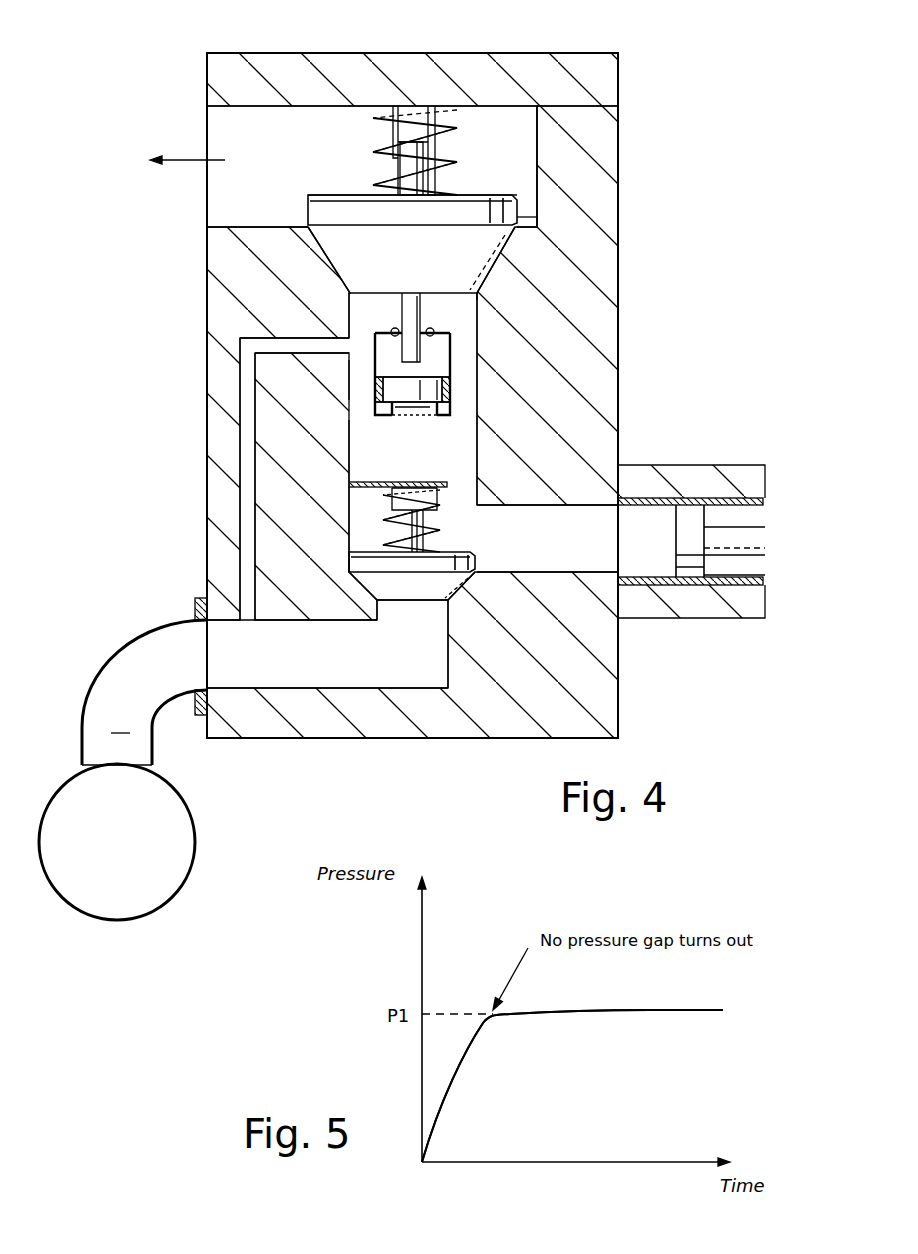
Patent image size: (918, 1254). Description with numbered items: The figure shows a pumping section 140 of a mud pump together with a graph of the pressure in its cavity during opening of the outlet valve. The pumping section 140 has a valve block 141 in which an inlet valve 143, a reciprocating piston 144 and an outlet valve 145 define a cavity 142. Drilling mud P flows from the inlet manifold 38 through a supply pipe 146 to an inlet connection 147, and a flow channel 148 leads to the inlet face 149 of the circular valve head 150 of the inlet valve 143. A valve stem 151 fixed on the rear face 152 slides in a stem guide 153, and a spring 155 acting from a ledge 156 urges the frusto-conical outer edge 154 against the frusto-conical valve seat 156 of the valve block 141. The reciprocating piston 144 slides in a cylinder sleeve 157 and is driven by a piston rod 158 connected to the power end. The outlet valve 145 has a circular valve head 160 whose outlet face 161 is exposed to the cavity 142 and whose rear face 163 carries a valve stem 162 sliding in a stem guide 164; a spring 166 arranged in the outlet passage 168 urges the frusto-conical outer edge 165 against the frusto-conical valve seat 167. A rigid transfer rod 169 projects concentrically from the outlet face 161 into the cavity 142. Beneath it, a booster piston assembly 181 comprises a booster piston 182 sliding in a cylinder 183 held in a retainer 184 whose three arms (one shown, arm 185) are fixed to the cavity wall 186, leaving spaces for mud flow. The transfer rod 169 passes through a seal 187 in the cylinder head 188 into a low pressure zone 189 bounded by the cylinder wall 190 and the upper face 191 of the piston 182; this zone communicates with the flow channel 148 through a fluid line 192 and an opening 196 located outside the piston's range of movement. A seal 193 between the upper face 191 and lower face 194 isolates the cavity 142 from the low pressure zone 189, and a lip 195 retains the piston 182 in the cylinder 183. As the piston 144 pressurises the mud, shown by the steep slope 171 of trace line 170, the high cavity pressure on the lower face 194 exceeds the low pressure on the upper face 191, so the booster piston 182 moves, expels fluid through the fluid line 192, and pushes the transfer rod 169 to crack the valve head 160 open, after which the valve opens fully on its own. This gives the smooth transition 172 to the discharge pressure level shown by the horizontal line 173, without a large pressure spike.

In FIG. 4, the inlet manifold 38 is at (97, 917).
In FIG. 4, the pumping section 140 is at (527, 50).
In FIG. 4, the valve block 141 is at (617, 220).
In FIG. 4, the cavity 142 is at (425, 475).
In FIG. 4, the inlet valve 143 is at (490, 561).
In FIG. 4, the reciprocating piston 144 is at (688, 522).
In FIG. 4, the outlet valve 145 is at (493, 188).
In FIG. 4, the supply pipe 146 is at (97, 683).
In FIG. 4, the inlet connection 147 is at (195, 603).
In FIG. 4, the flow channel 148 is at (268, 681).
In FIG. 4, the inlet face 149 is at (403, 602).
In FIG. 4, the valve head 150 is at (443, 527).
In FIG. 4, the valve stem 151 is at (353, 543).
In FIG. 4, the rear face 152 is at (353, 560).
In FIG. 4, the stem guide 153 is at (385, 512).
In FIG. 4, the frusto-conical outer edge 154 is at (457, 590).
In FIG. 4, the spring 155 is at (563, 506).
In FIG. 4, the ledge 156 is at (353, 486).
In FIG. 4, the cylinder sleeve 157 is at (710, 583).
In FIG. 4, the piston rod 158 is at (725, 538).
In FIG. 4, the valve head 160 is at (537, 217).
In FIG. 4, the outlet face 161 is at (430, 303).
In FIG. 4, the valve stem 162 is at (437, 173).
In FIG. 4, the rear face 163 is at (327, 193).
In FIG. 4, the stem guide 164 is at (438, 137).
In FIG. 4, the frusto-conical outer edge 165 is at (490, 258).
In FIG. 4, the spring 166 is at (443, 133).
In FIG. 4, the frusto-conical valve seat 167 is at (480, 288).
In FIG. 4, the outlet passage 168 is at (267, 220).
In FIG. 4, the transfer rod 169 is at (347, 300).
In FIG. 5, the trace line 170 is at (716, 1005).
In FIG. 5, the steep slope 171 is at (445, 1097).
In FIG. 5, the smooth transition 172 is at (487, 1023).
In FIG. 5, the horizontal line 173 is at (633, 1013).
In FIG. 4, the booster piston assembly 181 is at (470, 393).
In FIG. 4, the booster piston 182 is at (437, 418).
In FIG. 4, the cylinder 183 is at (453, 343).
In FIG. 4, the retainer 184 is at (208, 394).
In FIG. 4, the arm 185 is at (360, 365).
In FIG. 4, the cavity wall 186 is at (360, 445).
In FIG. 4, the seal 187 is at (377, 340).
In FIG. 4, the cylinder head 188 is at (450, 327).
In FIG. 4, the low pressure zone 189 is at (453, 357).
In FIG. 4, the cylinder wall 190 is at (455, 385).
In FIG. 4, the upper face 191 is at (360, 380).
In FIG. 4, the fluid line 192 is at (247, 582).
In FIG. 4, the seal 193 is at (437, 413).
In FIG. 4, the lower face 194 is at (370, 427).
In FIG. 4, the lip 195 is at (480, 440).
In FIG. 4, the opening 196 is at (390, 334).